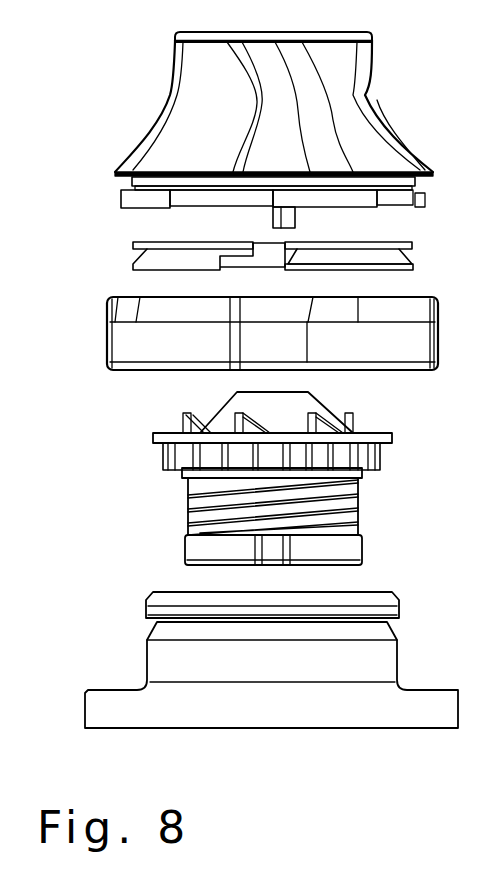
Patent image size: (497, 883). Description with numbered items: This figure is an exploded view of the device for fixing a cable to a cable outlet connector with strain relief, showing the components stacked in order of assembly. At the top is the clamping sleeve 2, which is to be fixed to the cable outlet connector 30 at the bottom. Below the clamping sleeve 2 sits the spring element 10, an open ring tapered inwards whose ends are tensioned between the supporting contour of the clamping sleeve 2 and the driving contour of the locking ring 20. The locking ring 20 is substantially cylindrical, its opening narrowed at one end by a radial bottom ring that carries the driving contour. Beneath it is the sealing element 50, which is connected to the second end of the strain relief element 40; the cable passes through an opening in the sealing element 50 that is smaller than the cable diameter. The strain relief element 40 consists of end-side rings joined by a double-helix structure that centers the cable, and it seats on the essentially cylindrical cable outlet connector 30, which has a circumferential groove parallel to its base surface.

The clamping sleeve 2 is at (203, 113).
The spring element 10 is at (175, 258).
The locking ring 20 is at (203, 340).
The sealing element 50 is at (270, 408).
The strain relief element 40 is at (195, 517).
The cable outlet connector 30 is at (185, 661).